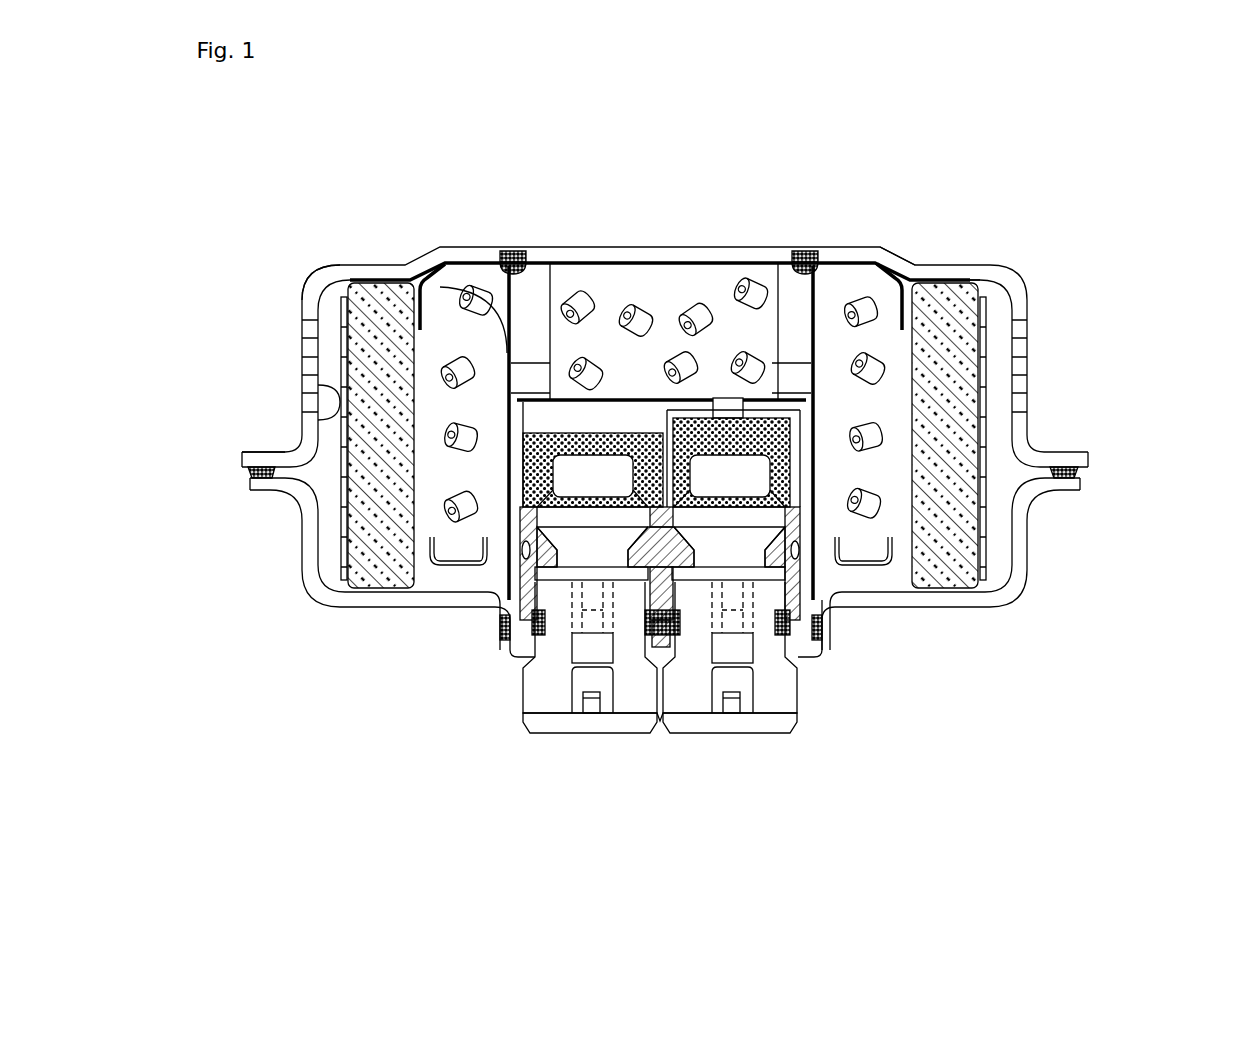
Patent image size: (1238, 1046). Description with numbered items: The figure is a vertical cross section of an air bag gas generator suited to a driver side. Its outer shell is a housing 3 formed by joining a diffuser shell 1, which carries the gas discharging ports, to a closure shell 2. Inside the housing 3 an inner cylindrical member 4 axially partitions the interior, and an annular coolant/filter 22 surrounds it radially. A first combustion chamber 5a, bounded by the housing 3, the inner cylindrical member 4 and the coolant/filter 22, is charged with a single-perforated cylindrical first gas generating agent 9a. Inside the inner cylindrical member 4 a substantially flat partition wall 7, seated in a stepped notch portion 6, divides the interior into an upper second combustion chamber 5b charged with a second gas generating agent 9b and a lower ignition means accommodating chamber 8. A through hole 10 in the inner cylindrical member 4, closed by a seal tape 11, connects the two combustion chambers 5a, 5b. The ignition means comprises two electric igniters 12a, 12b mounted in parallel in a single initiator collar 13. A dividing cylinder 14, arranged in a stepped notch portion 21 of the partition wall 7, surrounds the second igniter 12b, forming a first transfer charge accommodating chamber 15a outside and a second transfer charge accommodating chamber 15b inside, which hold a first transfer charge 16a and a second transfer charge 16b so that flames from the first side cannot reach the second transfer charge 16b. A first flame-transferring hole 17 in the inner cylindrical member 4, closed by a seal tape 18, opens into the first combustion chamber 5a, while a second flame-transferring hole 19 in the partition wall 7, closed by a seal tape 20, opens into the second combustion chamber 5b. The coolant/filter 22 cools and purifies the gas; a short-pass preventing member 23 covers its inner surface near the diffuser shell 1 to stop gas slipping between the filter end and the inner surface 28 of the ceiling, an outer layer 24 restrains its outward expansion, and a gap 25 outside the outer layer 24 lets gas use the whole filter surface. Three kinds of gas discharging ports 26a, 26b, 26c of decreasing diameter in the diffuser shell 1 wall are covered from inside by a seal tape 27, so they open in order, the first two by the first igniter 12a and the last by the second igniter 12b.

The diffuser shell 1 is at (1047, 453).
The closure shell 2 is at (1027, 517).
The housing 3 is at (724, 452).
The inner cylindrical member 4 is at (825, 325).
The first combustion chamber 5a is at (907, 265).
The second combustion chamber 5b is at (714, 284).
The stepped notch portion 6 is at (533, 405).
The partition wall 7 is at (617, 413).
The ignition means accommodating chamber 8 is at (659, 755).
The first gas generating agent 9a is at (495, 300).
The second gas generating agent 9b is at (625, 312).
The through hole 10 is at (530, 374).
The seal tape 11 is at (419, 282).
The first igniter 12a is at (578, 517).
The second igniter 12b is at (830, 600).
The initiator collar 13 is at (743, 533).
The dividing cylinder 14 is at (812, 460).
The first transfer charge accommodating chamber 15a is at (538, 467).
The second transfer charge accommodating chamber 15b is at (735, 400).
The first transfer charge 16a is at (407, 525).
The second transfer charge 16b is at (939, 381).
The first flame-transferring hole 17 is at (507, 483).
The seal tape 18 is at (483, 595).
The second flame-transferring hole 19 is at (798, 262).
The seal tape 20 is at (895, 292).
The stepped notch portion 21 is at (660, 412).
The coolant/filter 22 is at (368, 287).
The short-pass preventing member 23 is at (437, 285).
The outer layer 24 is at (290, 441).
The gap 25 is at (322, 298).
The gas discharging port 26a is at (310, 335).
The gas discharging port 26b is at (310, 370).
The gas discharging port 26c is at (310, 400).
The seal tape 27 is at (330, 410).
The inner surface 28 is at (888, 290).